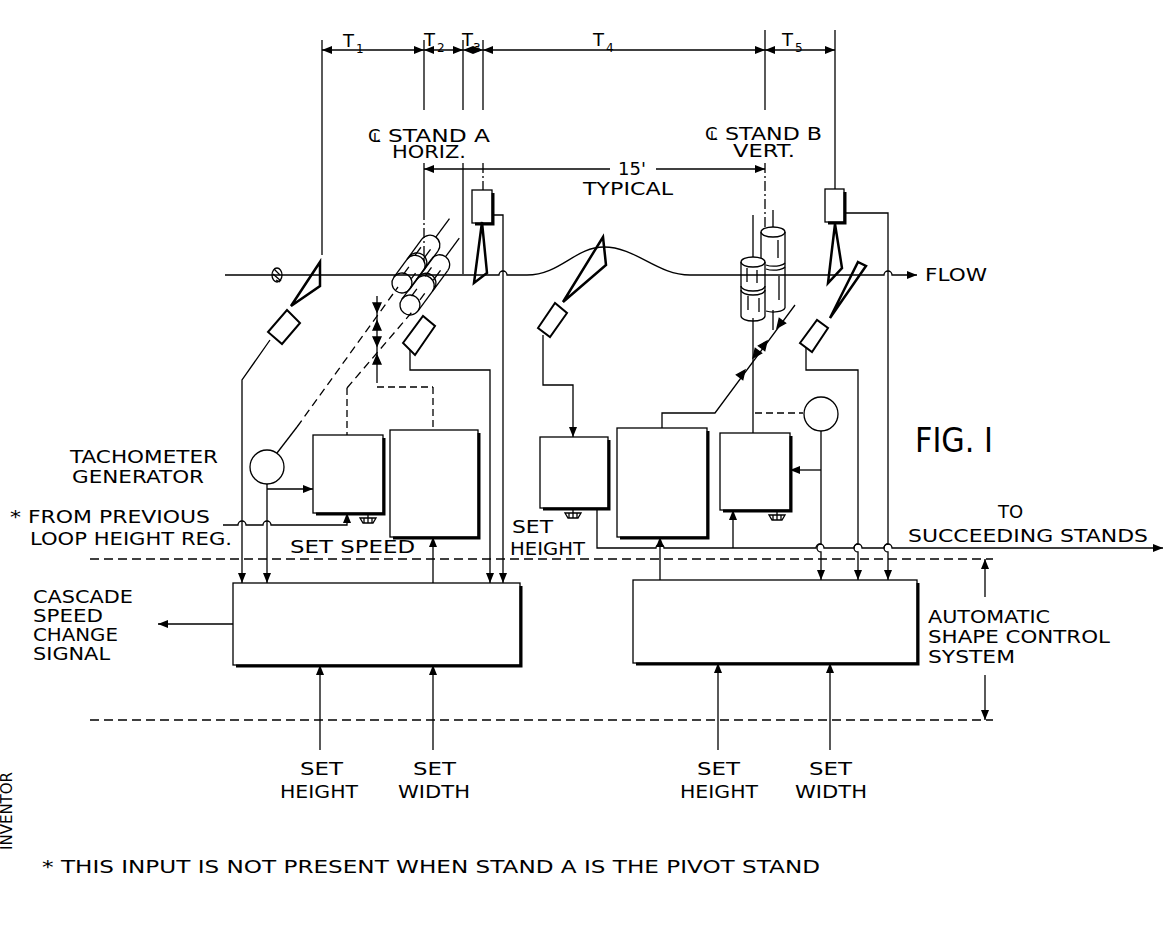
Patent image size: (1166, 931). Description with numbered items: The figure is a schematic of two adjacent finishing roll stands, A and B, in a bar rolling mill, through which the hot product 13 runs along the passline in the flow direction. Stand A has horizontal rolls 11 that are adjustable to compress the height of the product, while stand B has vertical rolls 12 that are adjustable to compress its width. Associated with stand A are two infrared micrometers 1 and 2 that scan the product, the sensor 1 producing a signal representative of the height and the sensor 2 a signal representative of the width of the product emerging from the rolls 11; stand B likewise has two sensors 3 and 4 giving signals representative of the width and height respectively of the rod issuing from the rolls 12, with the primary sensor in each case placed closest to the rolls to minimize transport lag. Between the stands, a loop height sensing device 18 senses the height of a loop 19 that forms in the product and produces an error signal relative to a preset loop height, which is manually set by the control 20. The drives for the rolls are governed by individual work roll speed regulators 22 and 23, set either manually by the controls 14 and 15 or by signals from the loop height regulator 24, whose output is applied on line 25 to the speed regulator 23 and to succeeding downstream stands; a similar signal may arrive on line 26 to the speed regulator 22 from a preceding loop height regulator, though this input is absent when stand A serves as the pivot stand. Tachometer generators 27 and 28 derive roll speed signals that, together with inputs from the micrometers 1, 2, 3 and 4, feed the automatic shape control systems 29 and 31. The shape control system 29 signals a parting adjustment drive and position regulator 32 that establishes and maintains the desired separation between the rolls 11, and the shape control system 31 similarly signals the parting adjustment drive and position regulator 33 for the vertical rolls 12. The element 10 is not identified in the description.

The infrared micrometer 1 is at (439, 449).
The infrared micrometer 2 is at (472, 203).
The sensor 3 is at (825, 203).
The sensor 4 is at (827, 330).
The entry speed detector 10 is at (288, 336).
The horizontal rolls 11 is at (408, 265).
The vertical rolls 12 is at (746, 253).
The product 13 is at (317, 268).
The control 14 is at (366, 522).
The control 15 is at (780, 521).
The loop height sensing device 18 is at (546, 315).
The loop 19 is at (578, 255).
The control 20 is at (566, 516).
The work roll speed regulator 22 is at (336, 435).
The work roll speed regulator 23 is at (743, 433).
The loop height regulator 24 is at (541, 488).
The line 25 is at (713, 550).
The line 26 is at (286, 526).
The tachometer generator 27 is at (263, 450).
The tachometer generator 28 is at (828, 426).
The automatic shape control system 29 is at (245, 600).
The automatic shape control system 31 is at (640, 601).
The parting adjustment drive and position regulator 32 is at (440, 432).
The parting adjustment drive and position regulator 33 is at (630, 430).